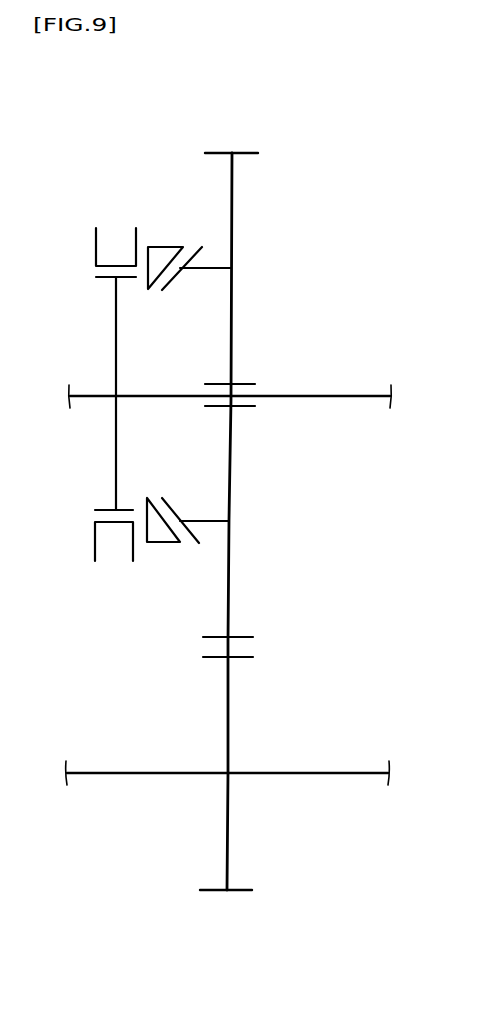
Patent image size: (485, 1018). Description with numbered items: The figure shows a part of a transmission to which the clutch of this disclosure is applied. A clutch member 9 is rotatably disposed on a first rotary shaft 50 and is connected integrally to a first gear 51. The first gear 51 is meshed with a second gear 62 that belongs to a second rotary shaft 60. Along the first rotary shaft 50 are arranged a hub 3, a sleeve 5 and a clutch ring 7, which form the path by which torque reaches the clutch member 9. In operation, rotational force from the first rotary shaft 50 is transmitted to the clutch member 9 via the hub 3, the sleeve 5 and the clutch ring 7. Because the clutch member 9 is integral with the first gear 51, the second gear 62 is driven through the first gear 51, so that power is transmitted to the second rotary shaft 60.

The first gear 51 is at (220, 153).
The sleeve 5 is at (96, 247).
The hub 3 is at (116, 323).
The clutch ring 7 is at (165, 247).
The clutch member 9 is at (180, 278).
The first rotary shaft 50 is at (345, 396).
The second rotary shaft 60 is at (343, 773).
The second gear 62 is at (235, 893).